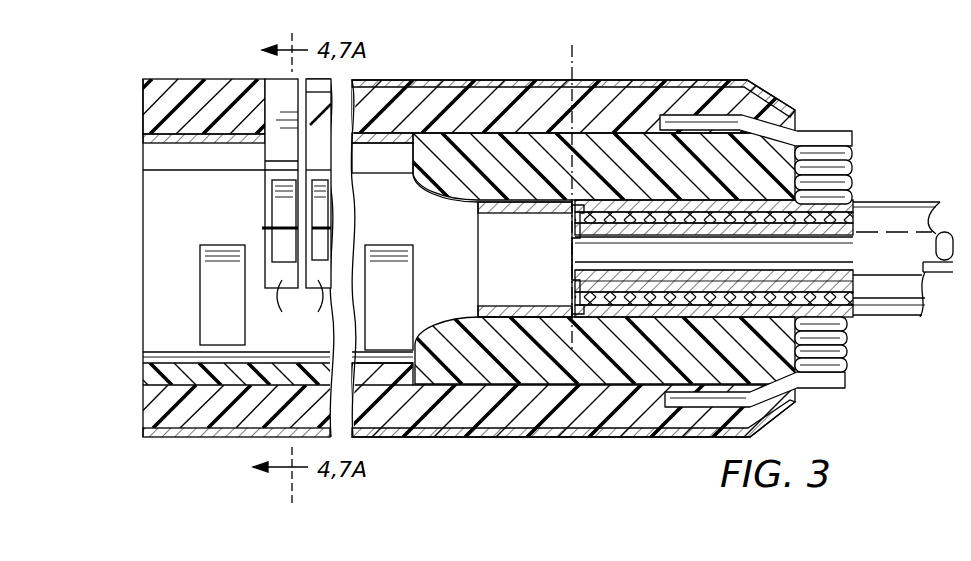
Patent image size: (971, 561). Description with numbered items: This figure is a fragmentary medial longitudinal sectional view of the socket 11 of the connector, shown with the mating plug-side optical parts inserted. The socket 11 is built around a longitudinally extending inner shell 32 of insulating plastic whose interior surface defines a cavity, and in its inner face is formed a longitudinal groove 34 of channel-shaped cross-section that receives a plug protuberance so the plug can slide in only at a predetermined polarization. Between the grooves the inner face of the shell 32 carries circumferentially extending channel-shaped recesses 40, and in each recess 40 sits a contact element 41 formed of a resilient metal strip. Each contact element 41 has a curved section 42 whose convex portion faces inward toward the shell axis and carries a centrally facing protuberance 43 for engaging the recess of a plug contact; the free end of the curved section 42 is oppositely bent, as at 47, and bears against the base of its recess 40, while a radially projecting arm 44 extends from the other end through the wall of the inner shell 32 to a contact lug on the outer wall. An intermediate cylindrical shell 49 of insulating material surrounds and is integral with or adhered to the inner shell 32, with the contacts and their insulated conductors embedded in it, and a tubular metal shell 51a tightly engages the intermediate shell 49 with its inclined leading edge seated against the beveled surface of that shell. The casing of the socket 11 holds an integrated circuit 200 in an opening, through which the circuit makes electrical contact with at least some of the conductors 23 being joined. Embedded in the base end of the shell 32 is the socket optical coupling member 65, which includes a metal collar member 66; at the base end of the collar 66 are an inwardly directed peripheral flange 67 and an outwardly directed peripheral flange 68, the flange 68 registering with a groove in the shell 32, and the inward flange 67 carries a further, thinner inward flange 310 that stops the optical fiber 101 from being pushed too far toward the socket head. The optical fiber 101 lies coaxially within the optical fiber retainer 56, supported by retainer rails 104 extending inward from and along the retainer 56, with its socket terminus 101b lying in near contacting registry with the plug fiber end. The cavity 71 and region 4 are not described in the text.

The socket 11 is at (463, 74).
The conductors 23 is at (770, 118).
The inner shell 32 is at (450, 158).
The groove 34 is at (202, 160).
The channel-shaped recesses 40 is at (300, 306).
The contact element 41 is at (283, 206).
The curved section 42 is at (285, 252).
The protuberance 43 is at (262, 229).
The oppositely bent free end 47 is at (292, 183).
The intermediate cylindrical shell 49 is at (166, 105).
The tubular metal shell 51a is at (378, 98).
The optical fiber retainer 56 is at (827, 300).
The socket optical coupling member 65 is at (470, 274).
The collar member 66 is at (506, 188).
The inwardly directed peripheral flange 67 is at (572, 222).
The outwardly directed peripheral flange 68 is at (572, 210).
The chamber 71 is at (478, 247).
The optical fiber 101 is at (915, 202).
The optical fiber socket terminus 101b is at (607, 320).
The retainer rails 104 is at (660, 228).
The integrated circuit 200 is at (273, 85).
The further inwardly directed flange 310 is at (568, 258).
The cable portion 4 is at (964, 299).
The radially projecting arm 44 is at (957, 397).